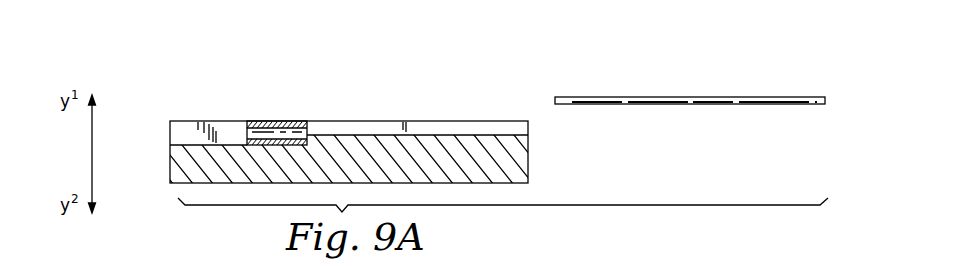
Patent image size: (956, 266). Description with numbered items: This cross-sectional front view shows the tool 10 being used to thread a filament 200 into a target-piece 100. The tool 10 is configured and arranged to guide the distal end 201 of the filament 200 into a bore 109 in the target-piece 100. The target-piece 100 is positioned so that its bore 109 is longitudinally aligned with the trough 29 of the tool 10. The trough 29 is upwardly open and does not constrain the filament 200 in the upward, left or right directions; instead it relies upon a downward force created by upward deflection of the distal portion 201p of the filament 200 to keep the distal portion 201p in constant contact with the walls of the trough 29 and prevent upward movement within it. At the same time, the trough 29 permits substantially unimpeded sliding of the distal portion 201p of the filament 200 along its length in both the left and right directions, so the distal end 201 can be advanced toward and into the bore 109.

The tool 10 is at (173, 85).
The trough 29 is at (510, 129).
The target-piece 100 is at (283, 115).
The bore 109 is at (242, 133).
The filament 200 is at (700, 96).
The distal end 201 is at (555, 101).
The distal portion 201p is at (566, 97).